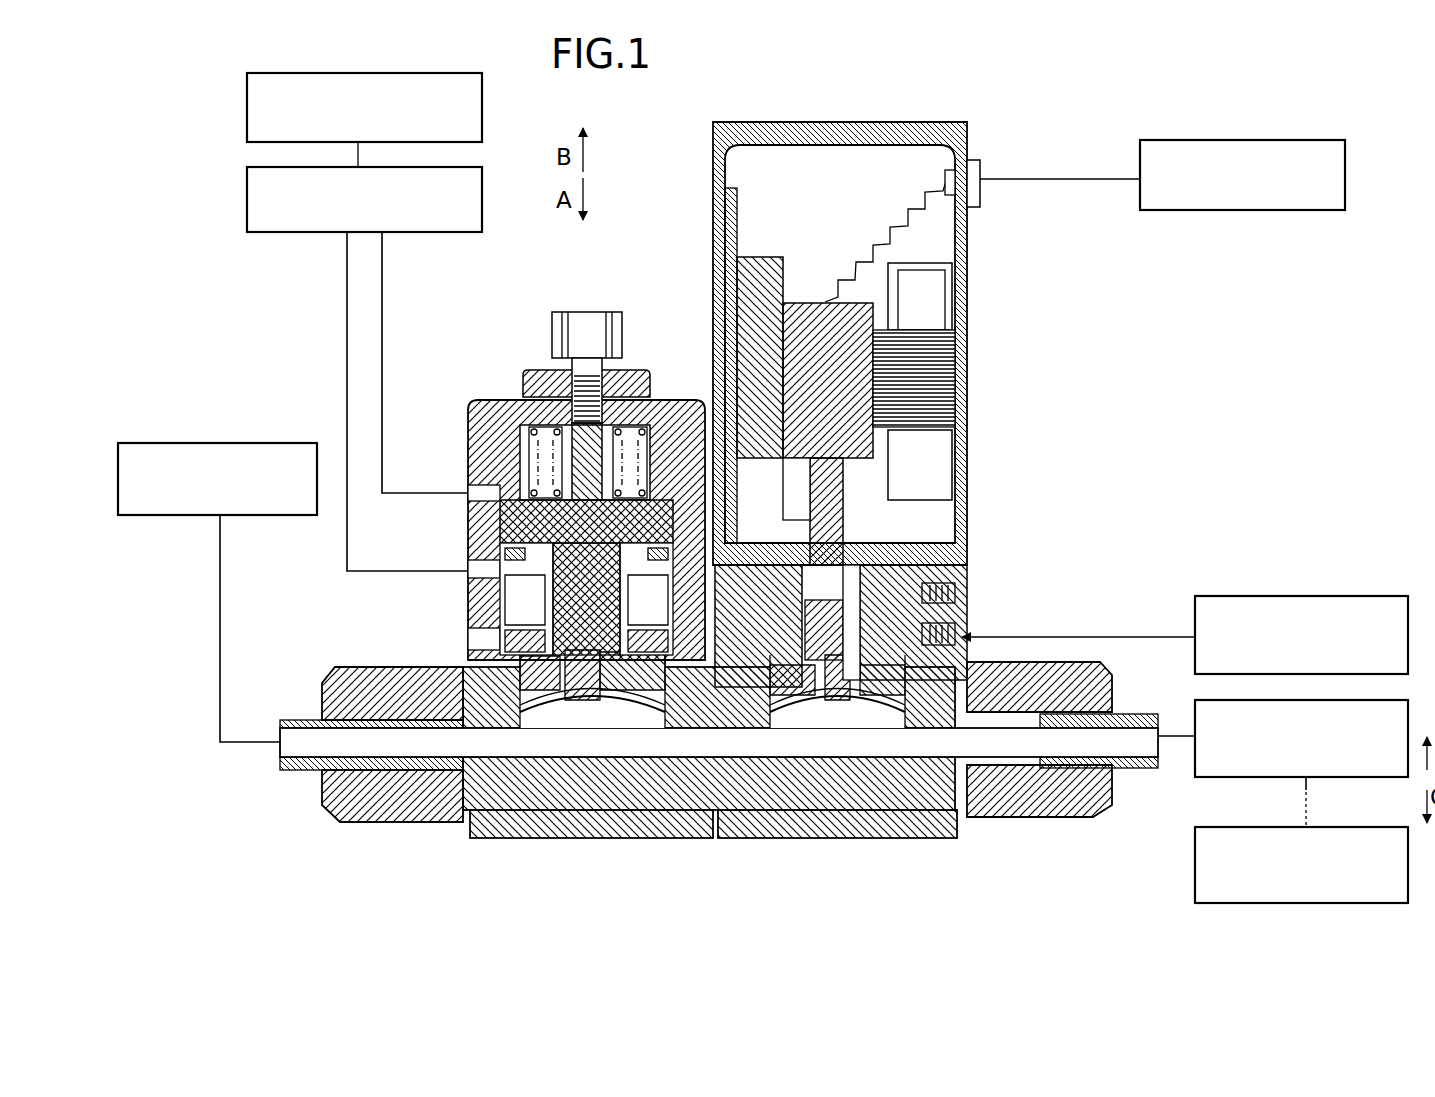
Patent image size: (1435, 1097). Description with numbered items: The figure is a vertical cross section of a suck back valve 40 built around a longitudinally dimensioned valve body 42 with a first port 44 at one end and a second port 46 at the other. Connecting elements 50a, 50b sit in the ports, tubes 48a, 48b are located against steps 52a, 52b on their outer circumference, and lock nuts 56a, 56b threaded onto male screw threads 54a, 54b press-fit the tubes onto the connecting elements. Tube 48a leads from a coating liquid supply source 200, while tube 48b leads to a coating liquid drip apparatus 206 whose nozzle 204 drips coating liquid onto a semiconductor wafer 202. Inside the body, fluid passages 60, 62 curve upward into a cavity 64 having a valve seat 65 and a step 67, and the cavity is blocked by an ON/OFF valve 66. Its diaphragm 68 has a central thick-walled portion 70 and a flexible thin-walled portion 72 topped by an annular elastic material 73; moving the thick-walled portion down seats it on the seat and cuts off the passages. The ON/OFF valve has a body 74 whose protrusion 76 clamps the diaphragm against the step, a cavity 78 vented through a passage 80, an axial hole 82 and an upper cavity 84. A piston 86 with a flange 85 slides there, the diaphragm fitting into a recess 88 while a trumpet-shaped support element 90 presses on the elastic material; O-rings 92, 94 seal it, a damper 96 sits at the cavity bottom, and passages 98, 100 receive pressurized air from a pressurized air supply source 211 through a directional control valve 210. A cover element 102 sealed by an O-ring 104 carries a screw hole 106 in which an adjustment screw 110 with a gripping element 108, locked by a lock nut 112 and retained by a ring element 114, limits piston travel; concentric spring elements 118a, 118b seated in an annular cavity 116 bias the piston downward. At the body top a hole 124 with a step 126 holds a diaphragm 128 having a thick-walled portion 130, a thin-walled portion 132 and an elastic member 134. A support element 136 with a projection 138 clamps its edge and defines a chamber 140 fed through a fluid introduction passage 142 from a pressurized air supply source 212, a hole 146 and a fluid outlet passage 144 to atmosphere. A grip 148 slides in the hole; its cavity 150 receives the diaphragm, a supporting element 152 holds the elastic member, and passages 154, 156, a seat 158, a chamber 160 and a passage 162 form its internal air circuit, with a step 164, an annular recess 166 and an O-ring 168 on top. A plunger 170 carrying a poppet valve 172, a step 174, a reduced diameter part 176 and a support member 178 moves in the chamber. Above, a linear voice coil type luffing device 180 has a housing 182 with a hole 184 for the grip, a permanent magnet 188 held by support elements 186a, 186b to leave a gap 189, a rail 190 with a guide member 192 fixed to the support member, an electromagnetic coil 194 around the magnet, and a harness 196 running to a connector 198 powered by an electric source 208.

The suck back valve 40 is at (906, 366).
The valve body 42 is at (738, 840).
The first port 44 is at (335, 820).
The second port 46 is at (1068, 824).
The tube 48a is at (298, 720).
The tube 48b is at (1128, 768).
The connecting element 50a is at (428, 800).
The connecting element 50b is at (990, 818).
The step 52a is at (405, 825).
The step 52b is at (1030, 820).
The male screw thread 54a is at (364, 823).
The male screw thread 54b is at (1085, 828).
The lock nut 56a is at (332, 672).
The lock nut 56b is at (1110, 808).
The fluid passage 60 is at (521, 756).
The fluid passage 62 is at (714, 756).
The cavity 64 is at (545, 800).
The valve seat 65 is at (560, 790).
The ON/OFF valve 66 is at (520, 555).
The step 67 is at (530, 790).
The diaphragm 68 is at (610, 790).
The thick-walled portion 70 is at (590, 800).
The thin-walled portion 72 is at (630, 800).
The elastic material 73 is at (655, 790).
The body 74 is at (520, 522).
The protrusion 76 is at (490, 800).
The cavity 78 is at (500, 642).
The passage 80 is at (470, 642).
The hole 82 is at (468, 630).
The cavity 84 is at (505, 585).
The flange 85 is at (500, 543).
The piston 86 is at (645, 577).
The recess 88 is at (691, 618).
The support element 90 is at (645, 636).
The O-ring 92 is at (540, 615).
The O-ring 94 is at (500, 507).
The damper 96 is at (530, 600).
The passage 98 is at (468, 566).
The passage 100 is at (470, 490).
The cover element 102 is at (485, 405).
The O-ring 104 is at (470, 442).
The screw hole 106 is at (628, 378).
The gripping element 108 is at (586, 320).
The adjustment screw 110 is at (592, 425).
The lock nut 112 is at (608, 422).
The ring element 114 is at (645, 457).
The annular cavity 116 is at (522, 455).
The spring element 118a is at (568, 422).
The spring element 118b is at (540, 425).
The hole 124 is at (880, 800).
The step 126 is at (885, 790).
The diaphragm 128 is at (820, 800).
The thick-walled portion 130 is at (800, 780).
The thin-walled portion 132 is at (850, 790).
The elastic member 134 is at (770, 800).
The support element 136 is at (962, 660).
The projection 138 is at (925, 800).
The chamber 140 is at (962, 652).
The fluid introduction passage 142 is at (975, 630).
The fluid outlet passage 144 is at (955, 577).
The hole 146 is at (955, 562).
The grip 148 is at (955, 542).
The cavity 150 is at (825, 756).
The supporting element 152 is at (743, 744).
The passage 154 is at (955, 633).
The passage 156 is at (955, 596).
The seat 158 is at (812, 522).
The chamber 160 is at (1000, 460).
The passage 162 is at (810, 486).
The step 164 is at (955, 415).
The annular recess 166 is at (955, 358).
The O-ring 168 is at (955, 394).
The plunger 170 is at (852, 510).
The poppet valve 172 is at (812, 502).
The step 174 is at (955, 437).
The reduced diameter part 176 is at (848, 458).
The support member 178 is at (802, 303).
The linear voice coil type luffing device 180 is at (866, 122).
The housing 182 is at (760, 135).
The hole 184 is at (955, 522).
The support element 186a is at (955, 472).
The support element 186b is at (955, 290).
The permanent magnet 188 is at (935, 302).
The gap 189 is at (1072, 259).
The rail 190 is at (740, 190).
The guide member 192 is at (760, 257).
The electromagnetic coil 194 is at (955, 377).
The harness 196 is at (838, 240).
The connector 198 is at (976, 160).
The coating liquid supply source 200 is at (222, 443).
The semiconductor wafer 202 is at (1195, 850).
The nozzle 204 is at (1306, 790).
The coating liquid drip apparatus 206 is at (1336, 777).
The electric source 208 is at (1190, 210).
The directional control valve 210 is at (247, 201).
The pressurized air supply source 211 is at (247, 108).
The pressurized air supply source 212 is at (1292, 596).